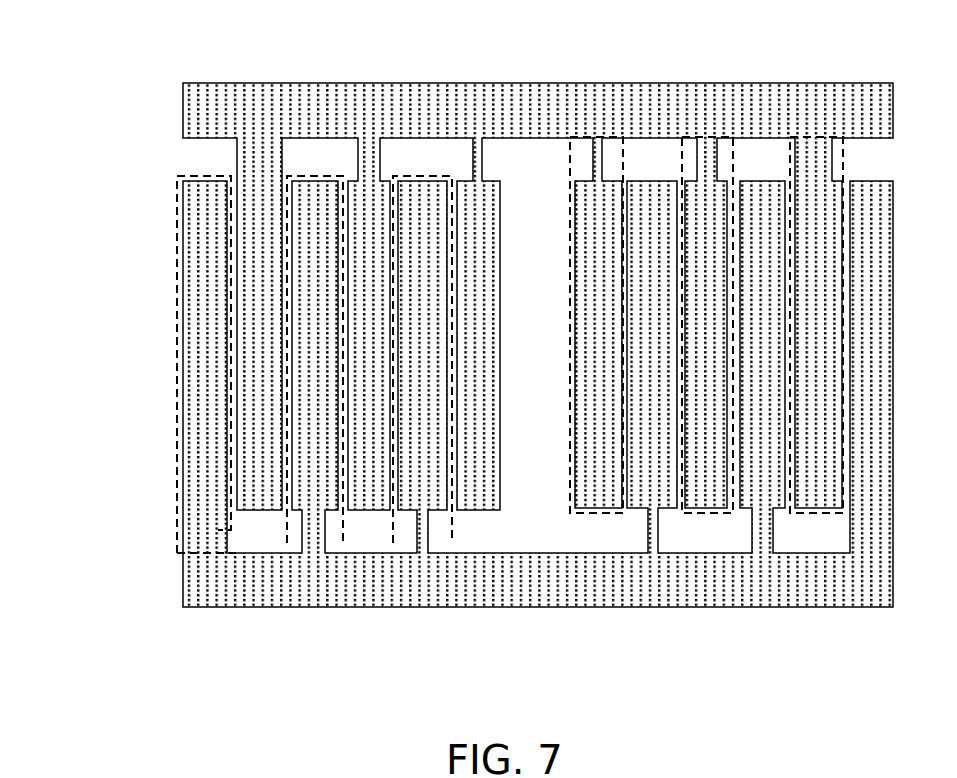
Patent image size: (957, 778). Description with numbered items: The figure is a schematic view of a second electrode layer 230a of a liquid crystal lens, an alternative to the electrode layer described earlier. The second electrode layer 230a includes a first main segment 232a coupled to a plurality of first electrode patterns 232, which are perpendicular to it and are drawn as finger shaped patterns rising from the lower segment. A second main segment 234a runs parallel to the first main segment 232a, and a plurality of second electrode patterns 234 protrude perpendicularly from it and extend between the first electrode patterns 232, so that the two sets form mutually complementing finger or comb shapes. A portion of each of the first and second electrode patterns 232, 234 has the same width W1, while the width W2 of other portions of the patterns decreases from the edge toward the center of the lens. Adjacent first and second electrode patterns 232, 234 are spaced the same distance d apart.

The second electrode layer 230a is at (479, 343).
The first electrode patterns 232 is at (231, 530).
The first main segment 232a is at (545, 583).
The second electrode patterns 234 is at (806, 160).
The second main segment 234a is at (600, 93).
The width W1 is at (274, 405).
The width W2 is at (510, 158).
The distance d is at (270, 203).